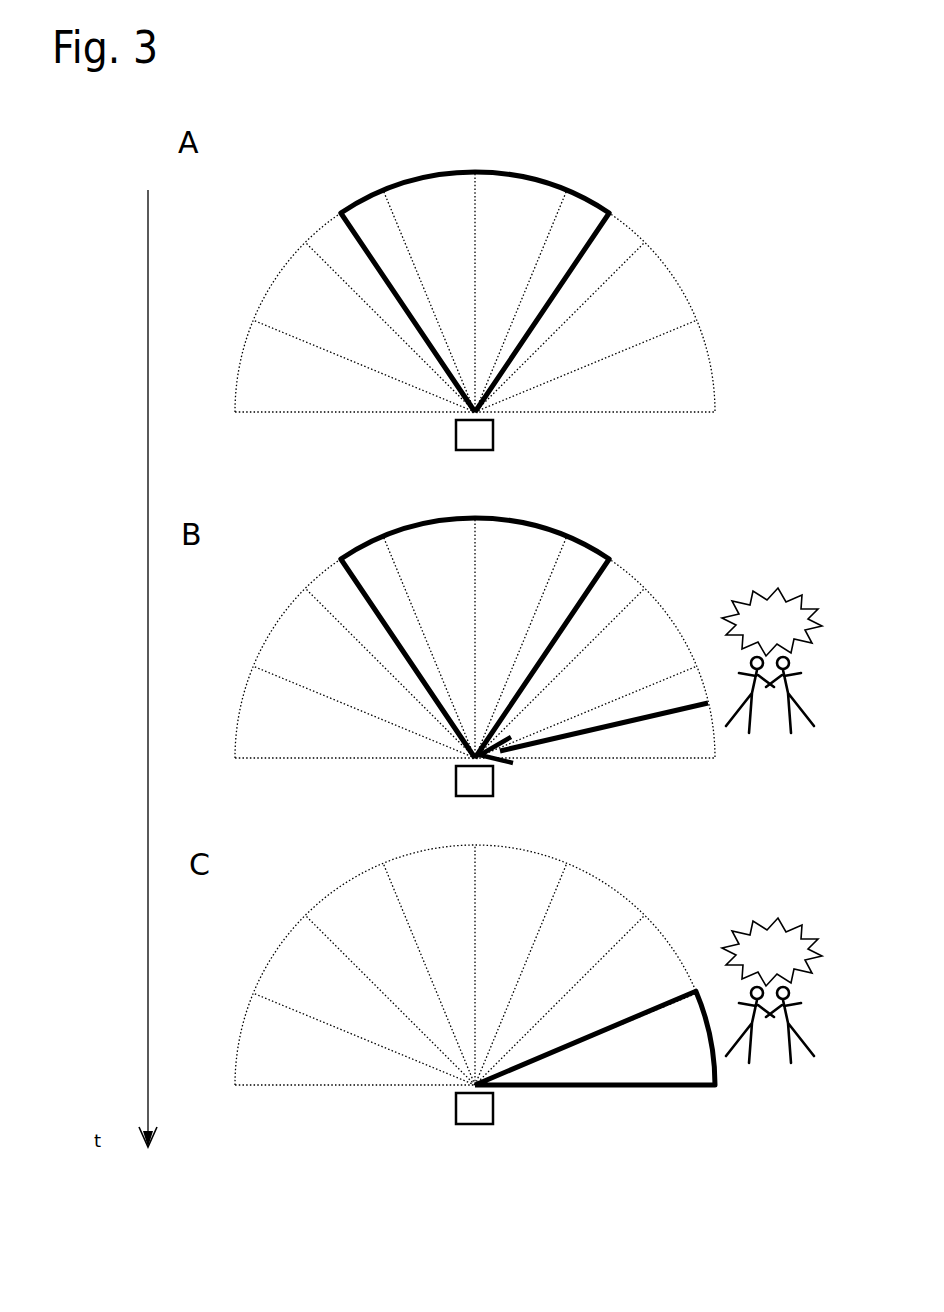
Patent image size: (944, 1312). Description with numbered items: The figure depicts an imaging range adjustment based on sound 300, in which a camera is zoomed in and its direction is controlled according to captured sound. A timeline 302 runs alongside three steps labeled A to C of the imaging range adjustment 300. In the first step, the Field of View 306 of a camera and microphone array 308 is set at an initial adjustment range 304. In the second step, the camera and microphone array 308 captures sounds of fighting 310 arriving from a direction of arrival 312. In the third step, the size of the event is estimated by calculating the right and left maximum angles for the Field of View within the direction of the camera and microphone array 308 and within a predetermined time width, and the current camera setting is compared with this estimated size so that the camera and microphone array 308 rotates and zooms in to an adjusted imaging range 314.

The imaging range adjustment based on sound 300 is at (768, 200).
The timeline 302 is at (147, 250).
The initial adjustment range 304 is at (390, 188).
The Field of View 306 is at (477, 292).
The camera and microphone array 308 is at (494, 440).
The sounds of fighting 310 is at (778, 590).
The direction of arrival 312 is at (613, 732).
The adjusted imaging range 314 is at (585, 1087).